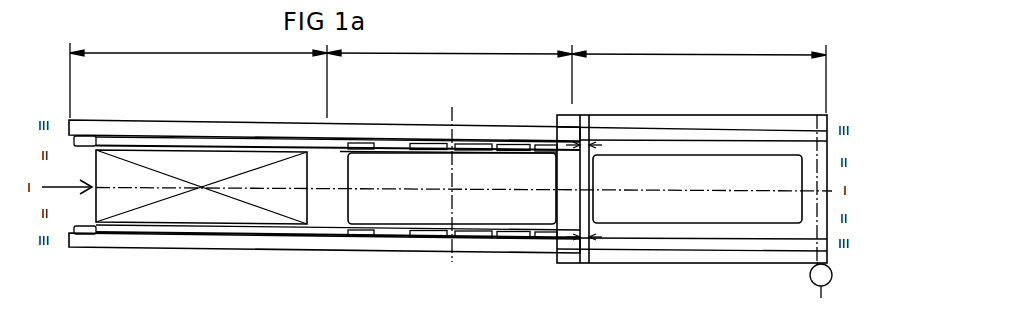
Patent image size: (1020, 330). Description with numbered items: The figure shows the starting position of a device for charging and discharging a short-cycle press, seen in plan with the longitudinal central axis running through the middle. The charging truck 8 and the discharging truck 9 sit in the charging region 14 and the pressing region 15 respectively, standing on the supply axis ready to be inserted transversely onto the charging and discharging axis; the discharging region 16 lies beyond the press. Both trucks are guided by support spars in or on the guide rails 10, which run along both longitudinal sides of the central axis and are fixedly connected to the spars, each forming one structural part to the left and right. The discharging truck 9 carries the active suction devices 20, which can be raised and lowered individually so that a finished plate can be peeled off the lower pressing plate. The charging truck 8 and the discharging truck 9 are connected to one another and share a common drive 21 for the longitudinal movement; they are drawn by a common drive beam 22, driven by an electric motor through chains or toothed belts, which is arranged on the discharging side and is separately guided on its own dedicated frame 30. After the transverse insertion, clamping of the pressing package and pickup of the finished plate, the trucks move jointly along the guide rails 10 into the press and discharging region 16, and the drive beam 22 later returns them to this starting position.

The charging truck 8 is at (162, 143).
The discharging truck 9 is at (503, 146).
The guide rails 10 is at (267, 132).
The charging region 14 is at (198, 74).
The pressing region 15 is at (449, 66).
The discharging region 16 is at (699, 71).
The active suction devices 20 is at (372, 145).
The drive 21 is at (813, 283).
The drive beam 22 is at (585, 185).
The frame 30 is at (728, 118).